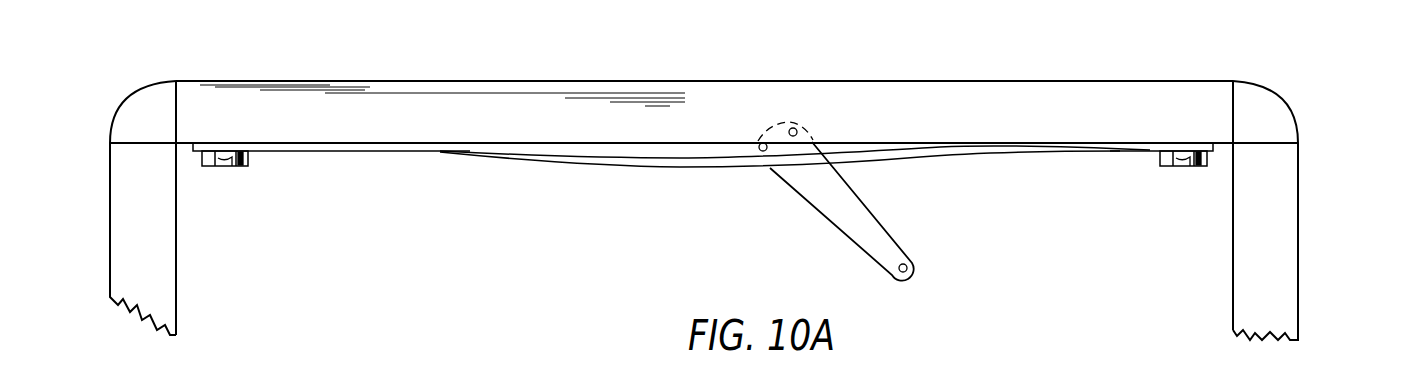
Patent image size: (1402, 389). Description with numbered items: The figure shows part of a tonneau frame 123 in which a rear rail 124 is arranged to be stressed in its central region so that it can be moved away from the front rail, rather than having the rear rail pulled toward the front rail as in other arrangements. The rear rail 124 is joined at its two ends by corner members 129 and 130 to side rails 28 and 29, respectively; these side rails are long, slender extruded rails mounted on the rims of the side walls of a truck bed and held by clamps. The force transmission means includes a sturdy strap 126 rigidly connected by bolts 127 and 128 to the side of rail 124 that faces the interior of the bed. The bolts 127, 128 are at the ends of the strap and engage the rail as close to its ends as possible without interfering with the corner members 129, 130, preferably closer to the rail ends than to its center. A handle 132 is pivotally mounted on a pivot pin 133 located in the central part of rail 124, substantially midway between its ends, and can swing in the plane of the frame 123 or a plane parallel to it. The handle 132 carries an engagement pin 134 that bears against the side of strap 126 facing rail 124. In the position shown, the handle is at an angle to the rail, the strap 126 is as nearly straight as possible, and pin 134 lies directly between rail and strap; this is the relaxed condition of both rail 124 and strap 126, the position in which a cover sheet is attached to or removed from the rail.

The tonneau frame 123 is at (128, 103).
The rear rail 124 is at (257, 81).
The strap 126 is at (433, 152).
The bolt 127 is at (230, 168).
The bolt 128 is at (1167, 167).
The corner member 129 is at (118, 132).
The corner member 130 is at (1288, 126).
The side rail 28 is at (122, 265).
The side rail 29 is at (1300, 240).
The handle 132 is at (843, 225).
The pivot pin 133 is at (805, 130).
The pin 134 is at (760, 150).